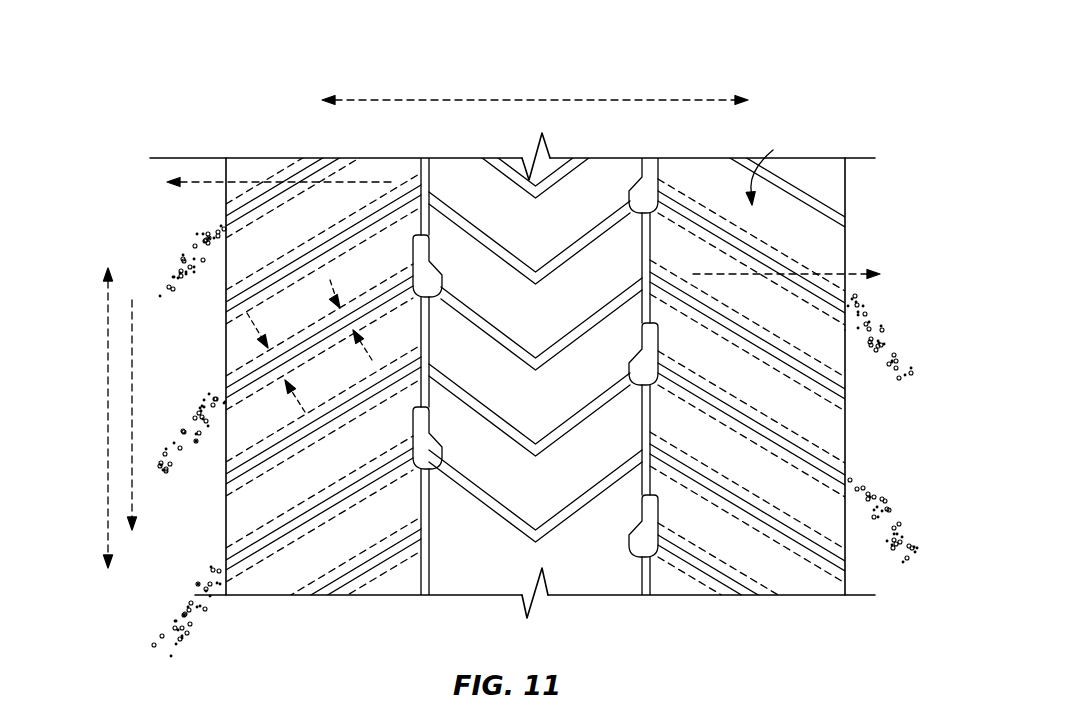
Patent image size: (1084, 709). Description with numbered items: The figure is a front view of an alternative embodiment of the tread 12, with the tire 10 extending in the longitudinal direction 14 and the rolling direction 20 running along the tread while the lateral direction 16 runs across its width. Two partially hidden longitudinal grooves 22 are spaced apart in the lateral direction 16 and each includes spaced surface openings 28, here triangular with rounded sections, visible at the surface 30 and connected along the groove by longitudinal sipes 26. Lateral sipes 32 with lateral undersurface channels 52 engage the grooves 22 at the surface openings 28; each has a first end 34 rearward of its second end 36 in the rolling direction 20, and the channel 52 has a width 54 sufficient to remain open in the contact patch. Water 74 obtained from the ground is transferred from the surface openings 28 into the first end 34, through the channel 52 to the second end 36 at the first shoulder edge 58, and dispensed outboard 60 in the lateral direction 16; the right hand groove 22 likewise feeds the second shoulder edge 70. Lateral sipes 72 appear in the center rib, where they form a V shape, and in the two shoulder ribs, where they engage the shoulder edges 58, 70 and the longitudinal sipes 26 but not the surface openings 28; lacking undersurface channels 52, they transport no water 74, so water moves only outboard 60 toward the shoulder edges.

The tire tread 10 is at (877, 62).
The tread 12 is at (847, 408).
The longitudinal direction 14 is at (106, 412).
The lateral direction 16 is at (526, 100).
The rolling direction 20 is at (136, 358).
The partially hidden longitudinal groove 22 is at (422, 160).
The longitudinal sipe 26 is at (428, 386).
The surface opening 28 is at (422, 283).
The surface 30 is at (770, 161).
The lateral sipe 32 is at (296, 342).
The first end 34 is at (412, 270).
The second end 36 is at (226, 390).
The lateral undersurface channel 52 is at (248, 397).
The width 54 is at (297, 397).
The first shoulder edge 58 is at (226, 168).
The outboard 60 is at (368, 182).
The second shoulder edge 70 is at (845, 240).
The lateral sipe 72 is at (496, 246).
The water 74 is at (180, 252).